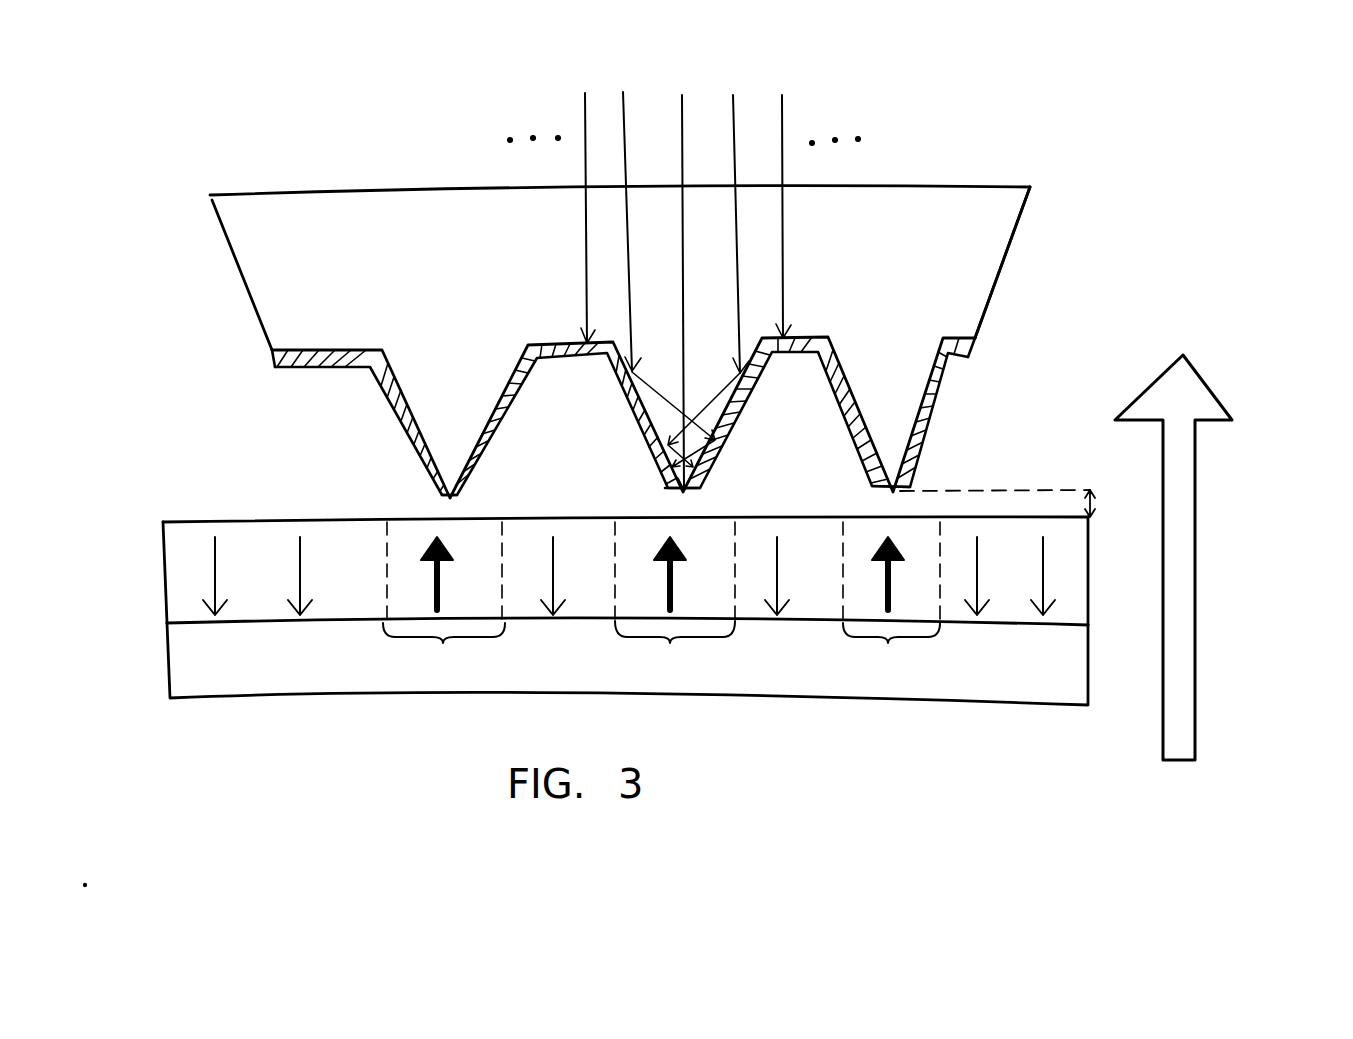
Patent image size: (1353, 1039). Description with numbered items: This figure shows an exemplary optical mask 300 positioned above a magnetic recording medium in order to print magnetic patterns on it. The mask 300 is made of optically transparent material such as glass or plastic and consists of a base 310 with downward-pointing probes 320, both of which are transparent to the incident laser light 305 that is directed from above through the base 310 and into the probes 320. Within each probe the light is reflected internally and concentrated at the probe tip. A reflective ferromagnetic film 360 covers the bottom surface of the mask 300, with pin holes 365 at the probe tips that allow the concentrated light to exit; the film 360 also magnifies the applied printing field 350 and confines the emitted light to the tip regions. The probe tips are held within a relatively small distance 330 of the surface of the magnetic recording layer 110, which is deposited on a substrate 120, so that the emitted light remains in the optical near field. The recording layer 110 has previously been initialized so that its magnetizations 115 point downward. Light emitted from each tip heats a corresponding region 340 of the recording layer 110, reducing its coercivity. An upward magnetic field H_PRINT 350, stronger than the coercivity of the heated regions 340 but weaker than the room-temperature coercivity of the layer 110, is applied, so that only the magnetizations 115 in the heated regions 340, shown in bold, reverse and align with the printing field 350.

The optical mask 300 is at (382, 311).
The incident laser light 305 is at (684, 269).
The base 310 is at (1013, 232).
The probes 320 is at (427, 397).
The distance 330 is at (1020, 503).
The heated region 340 is at (661, 651).
The printing field H_PRINT 350 is at (1234, 604).
The reflective ferromagnetic film 360 is at (408, 440).
The pin holes 365 is at (466, 498).
The magnetic recording layer 110 is at (163, 575).
The magnetizations 115 is at (212, 567).
The substrate 120 is at (163, 675).